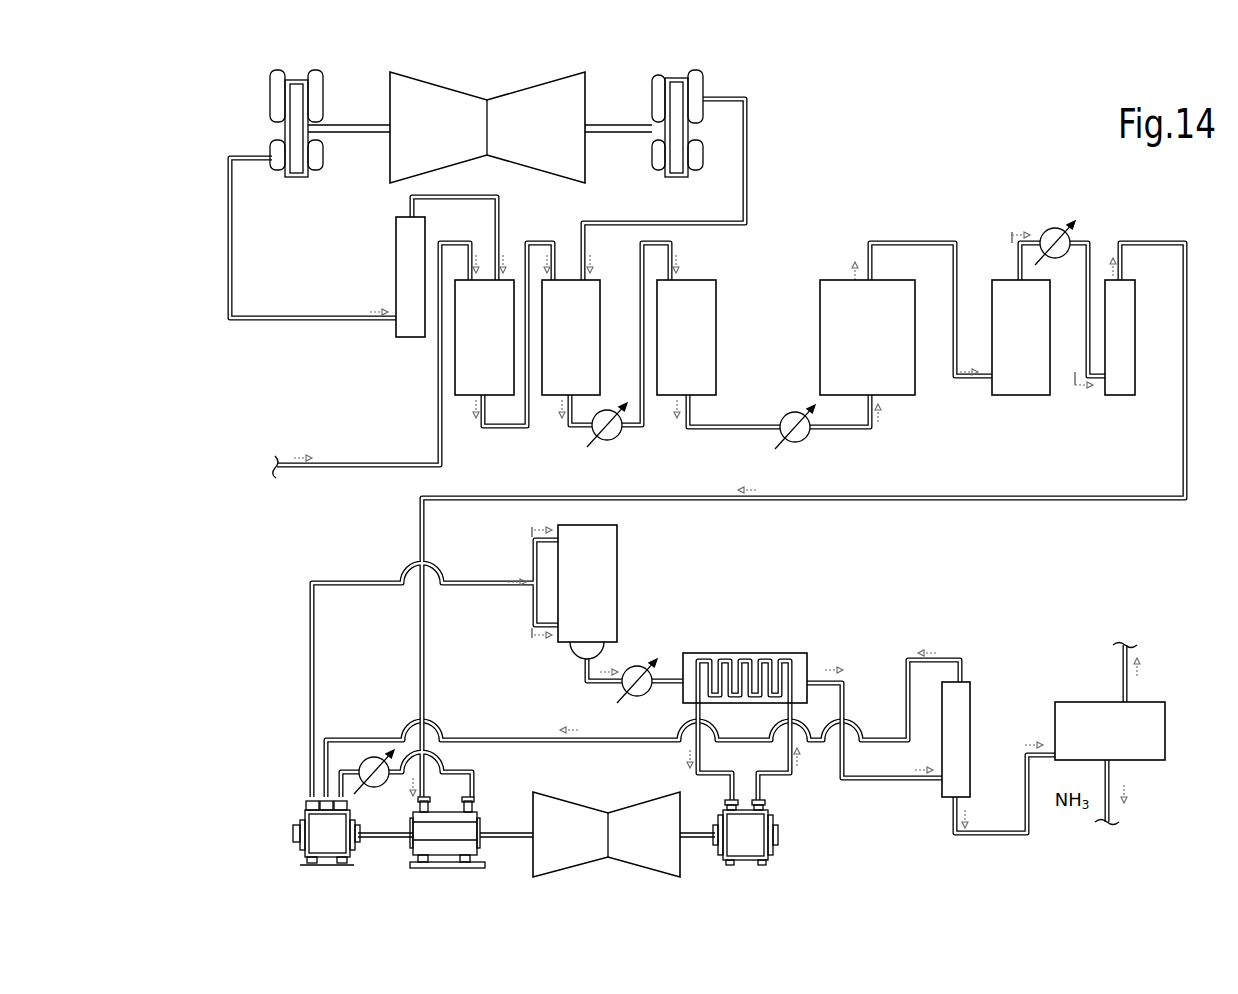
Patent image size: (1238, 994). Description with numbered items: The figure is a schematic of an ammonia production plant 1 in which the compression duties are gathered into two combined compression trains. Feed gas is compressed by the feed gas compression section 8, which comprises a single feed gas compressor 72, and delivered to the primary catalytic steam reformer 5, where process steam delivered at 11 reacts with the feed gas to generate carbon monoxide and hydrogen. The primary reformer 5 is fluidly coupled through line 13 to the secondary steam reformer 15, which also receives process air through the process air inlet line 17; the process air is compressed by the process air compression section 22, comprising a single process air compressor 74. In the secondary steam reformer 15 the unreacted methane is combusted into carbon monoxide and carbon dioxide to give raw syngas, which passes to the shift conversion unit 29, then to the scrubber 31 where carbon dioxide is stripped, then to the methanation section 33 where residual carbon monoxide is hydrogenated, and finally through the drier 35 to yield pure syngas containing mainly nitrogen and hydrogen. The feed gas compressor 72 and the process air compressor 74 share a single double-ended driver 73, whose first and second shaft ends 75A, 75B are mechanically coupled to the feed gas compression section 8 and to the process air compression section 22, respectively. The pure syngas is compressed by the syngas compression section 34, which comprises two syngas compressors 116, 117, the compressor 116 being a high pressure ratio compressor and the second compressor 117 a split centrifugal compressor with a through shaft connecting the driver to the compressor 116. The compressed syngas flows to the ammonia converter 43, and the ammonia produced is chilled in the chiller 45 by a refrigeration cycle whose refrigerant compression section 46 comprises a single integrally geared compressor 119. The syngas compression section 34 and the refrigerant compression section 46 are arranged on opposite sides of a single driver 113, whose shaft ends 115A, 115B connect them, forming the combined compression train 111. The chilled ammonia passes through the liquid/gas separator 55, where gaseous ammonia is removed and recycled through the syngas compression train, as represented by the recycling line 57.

The ammonia production plant 1 is at (192, 172).
The primary catalytic steam reformer 5 is at (493, 341).
The feed gas compression section 8 is at (272, 146).
The process steam delivery 11 is at (438, 410).
The connecting line 13 is at (505, 428).
The secondary steam reformer 15 is at (560, 341).
The process air inlet line 17 is at (587, 243).
The process air compression section 22 is at (695, 134).
The shift conversion unit 29 is at (706, 339).
The scrubber 31 is at (835, 347).
The methanation section 33 is at (1010, 336).
The syngas compression section 34 is at (365, 837).
The drier 35 is at (1127, 321).
The ammonia converter 43 is at (607, 576).
The chiller 45 is at (736, 661).
The refrigerant compression section 46 is at (771, 849).
The liquid/gas separator 55 is at (962, 719).
The recycling line 57 is at (624, 738).
The feed gas compressor 72 is at (293, 131).
The driver 73 is at (465, 118).
The process air compressor 74 is at (703, 92).
The first shaft end 75A is at (355, 133).
The second shaft end 75B is at (615, 125).
The combined compression train 111 is at (270, 836).
The driver 113 is at (566, 842).
The shaft end 115A is at (506, 832).
The shaft end 115B is at (699, 832).
The syngas compressor 116 is at (304, 822).
The syngas compressor 117 is at (422, 824).
The compressor 119 is at (752, 815).